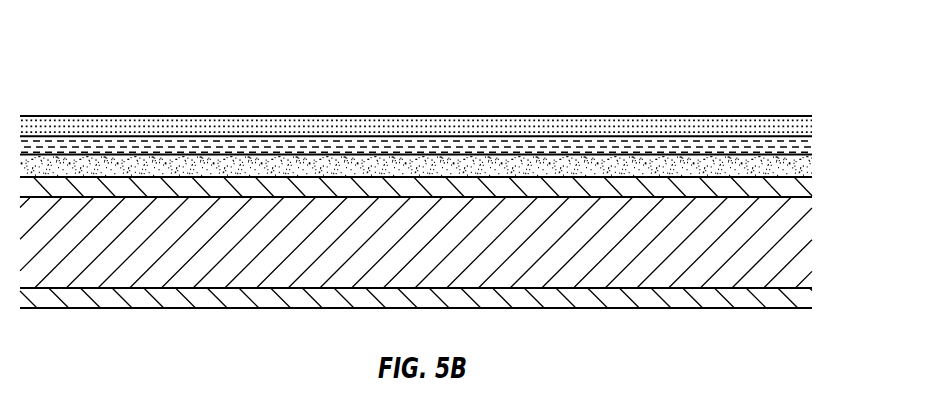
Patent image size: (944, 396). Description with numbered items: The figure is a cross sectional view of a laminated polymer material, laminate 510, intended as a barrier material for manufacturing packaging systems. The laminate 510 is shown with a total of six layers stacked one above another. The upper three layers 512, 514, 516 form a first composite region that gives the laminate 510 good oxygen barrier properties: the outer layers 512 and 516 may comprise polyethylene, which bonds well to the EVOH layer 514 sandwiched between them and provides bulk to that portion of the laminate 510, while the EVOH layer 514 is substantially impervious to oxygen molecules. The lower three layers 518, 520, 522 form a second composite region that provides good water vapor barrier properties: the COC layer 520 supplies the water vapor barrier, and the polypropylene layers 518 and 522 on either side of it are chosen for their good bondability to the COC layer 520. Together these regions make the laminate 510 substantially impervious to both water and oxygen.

The laminate 510 is at (448, 193).
The first layer 512 is at (800, 123).
The EVOH layer 514 is at (809, 145).
The third layer 516 is at (801, 168).
The polypropylene layer 518 is at (801, 188).
The COC layer 520 is at (799, 245).
The polypropylene layer 522 is at (801, 299).